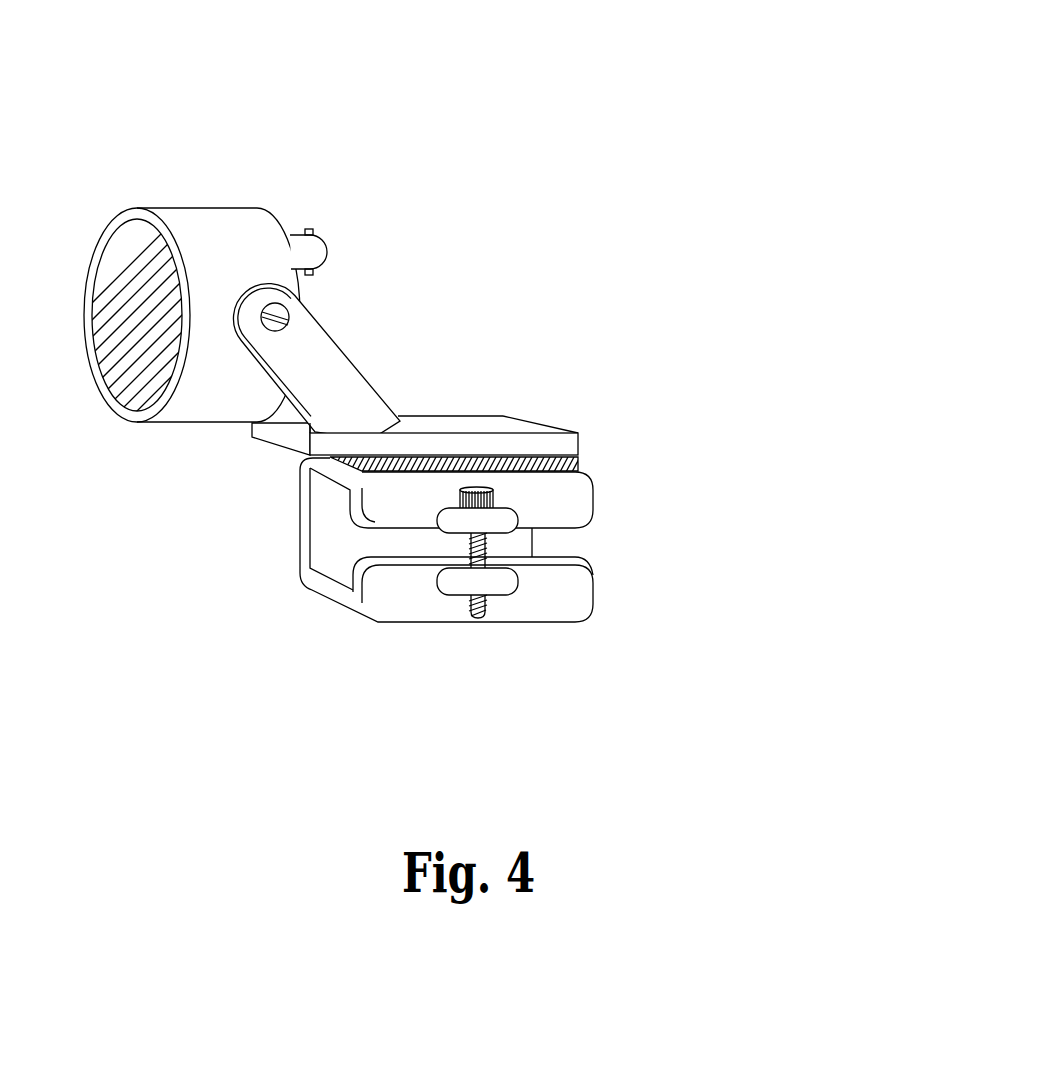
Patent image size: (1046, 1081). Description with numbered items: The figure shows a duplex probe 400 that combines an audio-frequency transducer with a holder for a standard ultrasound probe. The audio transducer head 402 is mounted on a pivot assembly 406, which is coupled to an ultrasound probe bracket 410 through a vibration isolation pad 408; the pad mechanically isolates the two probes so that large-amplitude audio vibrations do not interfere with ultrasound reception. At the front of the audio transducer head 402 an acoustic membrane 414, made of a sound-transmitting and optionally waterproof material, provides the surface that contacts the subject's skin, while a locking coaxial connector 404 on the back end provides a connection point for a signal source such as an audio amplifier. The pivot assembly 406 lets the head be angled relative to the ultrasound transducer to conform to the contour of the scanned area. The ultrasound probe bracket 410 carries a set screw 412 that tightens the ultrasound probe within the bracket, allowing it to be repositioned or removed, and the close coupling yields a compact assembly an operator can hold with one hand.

The duplex probe 400 is at (328, 42).
The audio transducer head 402 is at (303, 212).
The coaxial connector 404 is at (355, 253).
The pivot assembly 406 is at (358, 327).
The vibration isolation pad 408 is at (610, 463).
The ultrasound probe bracket 410 is at (620, 507).
The set screw 412 is at (514, 610).
The acoustic membrane 414 is at (106, 240).